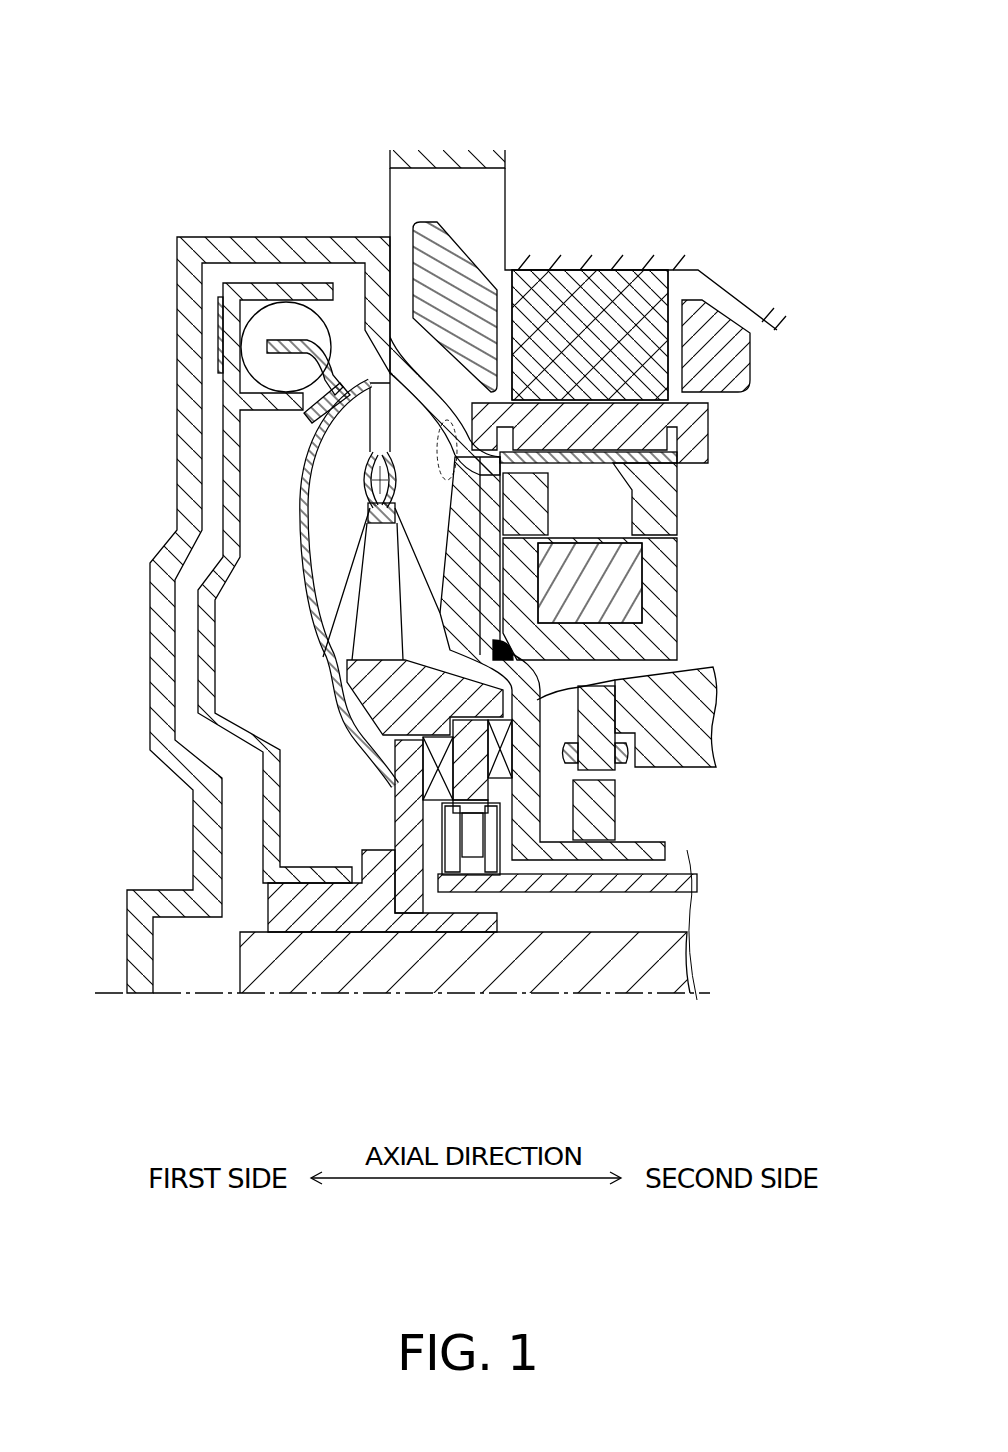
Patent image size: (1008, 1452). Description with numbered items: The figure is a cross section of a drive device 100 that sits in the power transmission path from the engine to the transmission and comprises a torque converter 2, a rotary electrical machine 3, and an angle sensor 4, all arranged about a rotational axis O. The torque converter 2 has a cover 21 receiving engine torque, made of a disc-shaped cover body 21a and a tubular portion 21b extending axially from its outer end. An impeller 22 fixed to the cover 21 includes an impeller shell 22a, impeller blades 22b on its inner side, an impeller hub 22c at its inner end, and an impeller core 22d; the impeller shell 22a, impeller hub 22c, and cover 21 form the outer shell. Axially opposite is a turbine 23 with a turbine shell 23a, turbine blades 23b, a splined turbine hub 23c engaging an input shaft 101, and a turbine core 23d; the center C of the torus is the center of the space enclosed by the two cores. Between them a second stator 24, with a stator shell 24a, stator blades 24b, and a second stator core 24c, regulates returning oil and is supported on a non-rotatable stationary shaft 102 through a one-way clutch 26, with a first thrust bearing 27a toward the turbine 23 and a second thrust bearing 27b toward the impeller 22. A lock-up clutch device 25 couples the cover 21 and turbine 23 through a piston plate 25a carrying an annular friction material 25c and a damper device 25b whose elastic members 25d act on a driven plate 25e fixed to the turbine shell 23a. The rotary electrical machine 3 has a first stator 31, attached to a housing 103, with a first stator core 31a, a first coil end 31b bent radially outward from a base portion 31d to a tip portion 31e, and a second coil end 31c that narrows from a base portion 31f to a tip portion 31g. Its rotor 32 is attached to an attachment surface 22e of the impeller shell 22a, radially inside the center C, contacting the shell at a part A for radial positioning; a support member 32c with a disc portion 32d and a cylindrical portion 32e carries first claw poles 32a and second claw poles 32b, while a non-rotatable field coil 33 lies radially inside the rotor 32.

The drive device 100 is at (375, 117).
The torque converter 2 is at (270, 214).
The cover 21 is at (175, 262).
The cover body 21a is at (193, 822).
The tubular portion 21b is at (230, 236).
The impeller 22 is at (389, 230).
The impeller shell 22a is at (474, 250).
The impeller blades 22b is at (500, 313).
The impeller hub 22c is at (665, 845).
The impeller core 22d is at (490, 565).
The attachment surface 22e is at (523, 647).
The turbine 23 is at (320, 527).
The turbine shell 23a is at (313, 437).
The turbine blades 23b is at (152, 566).
The turbine hub 23c is at (392, 907).
The turbine core 23d is at (298, 497).
The second stator 24 is at (346, 653).
The stator shell 24a is at (380, 715).
The stator blades 24b is at (362, 618).
The second stator core 24c is at (370, 612).
The lock-up clutch device 25 is at (220, 402).
The piston plate 25a is at (232, 425).
The damper device 25b is at (338, 315).
The friction material 25c is at (220, 320).
The elastic members 25d is at (221, 300).
The driven plate 25e is at (270, 347).
The one-way clutch 26 is at (393, 823).
The first thrust bearing 27a is at (393, 773).
The second thrust bearing 27b is at (700, 680).
The rotary electrical machine 3 is at (789, 377).
The first stator 31 is at (759, 353).
The first stator core 31a is at (697, 307).
The first coil end 31b is at (487, 293).
The second coil end 31c is at (733, 315).
The base portion 31d is at (490, 273).
The tip portion 31e is at (425, 228).
The base portion 31f is at (737, 303).
The tip portion 31g is at (777, 333).
The rotor 32 is at (722, 425).
The first claw poles 32a is at (667, 487).
The second claw poles 32b is at (635, 533).
The support member 32c is at (714, 458).
The disc portion 32d is at (650, 640).
The cylindrical portion 32e is at (693, 463).
The field coil 33 is at (600, 565).
The angle sensor 4 is at (629, 785).
The input shaft 101 is at (530, 975).
The stationary shaft 102 is at (640, 890).
The housing 103 is at (615, 247).
The part A is at (668, 272).
The center of a torus C is at (363, 503).
The rotational axis O is at (405, 993).